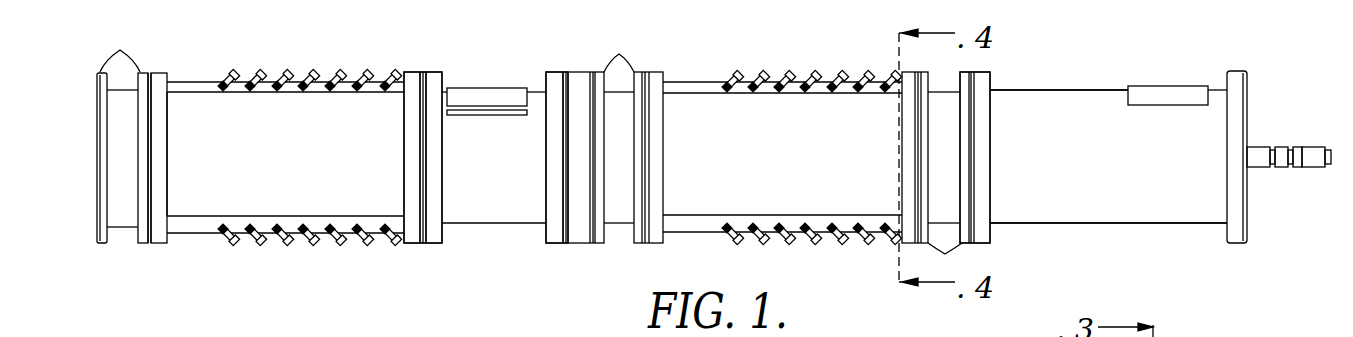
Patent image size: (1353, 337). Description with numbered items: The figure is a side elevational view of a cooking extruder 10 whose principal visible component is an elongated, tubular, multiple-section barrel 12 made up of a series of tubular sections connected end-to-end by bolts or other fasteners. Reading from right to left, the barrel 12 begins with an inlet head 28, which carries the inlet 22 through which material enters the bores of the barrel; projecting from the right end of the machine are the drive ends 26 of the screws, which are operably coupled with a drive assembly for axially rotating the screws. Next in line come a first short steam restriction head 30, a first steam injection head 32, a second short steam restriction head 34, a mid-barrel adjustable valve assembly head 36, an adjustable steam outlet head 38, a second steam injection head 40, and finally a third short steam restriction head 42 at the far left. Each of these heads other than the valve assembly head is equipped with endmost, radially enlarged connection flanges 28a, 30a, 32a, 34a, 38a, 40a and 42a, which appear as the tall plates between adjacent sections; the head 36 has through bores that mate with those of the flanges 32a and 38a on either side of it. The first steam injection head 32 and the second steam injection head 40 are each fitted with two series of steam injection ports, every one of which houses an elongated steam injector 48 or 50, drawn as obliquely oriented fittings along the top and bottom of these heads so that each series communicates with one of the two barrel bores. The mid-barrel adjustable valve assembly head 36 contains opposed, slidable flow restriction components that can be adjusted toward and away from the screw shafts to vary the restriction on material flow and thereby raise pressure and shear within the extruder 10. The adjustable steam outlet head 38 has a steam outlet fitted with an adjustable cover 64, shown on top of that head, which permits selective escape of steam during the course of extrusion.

The cooking extruder 10 is at (1258, 60).
The barrel 12 is at (1093, 76).
The inlet 22 is at (1163, 90).
The drive ends 26 is at (1310, 150).
The inlet head 28 is at (1150, 207).
The connection flange 28a is at (990, 82).
The first short steam restriction head 30 is at (943, 95).
The connection flange 30a is at (958, 176).
The first steam injection head 32 is at (698, 115).
The connection flange 32a is at (660, 240).
The second short steam restriction head 34 is at (620, 215).
The connection flange 34a is at (621, 49).
The mid-barrel adjustable valve assembly head 36 is at (580, 80).
The adjustable steam outlet head 38 is at (491, 215).
The connection flange 38a is at (435, 78).
The second steam injection head 40 is at (195, 105).
The connection flange 40a is at (160, 244).
The third short steam restriction head 42 is at (127, 222).
The connection flange 42a is at (120, 50).
The steam injector 48 is at (776, 78).
The steam injector 50 is at (360, 78).
The adjustable cover 64 is at (478, 112).